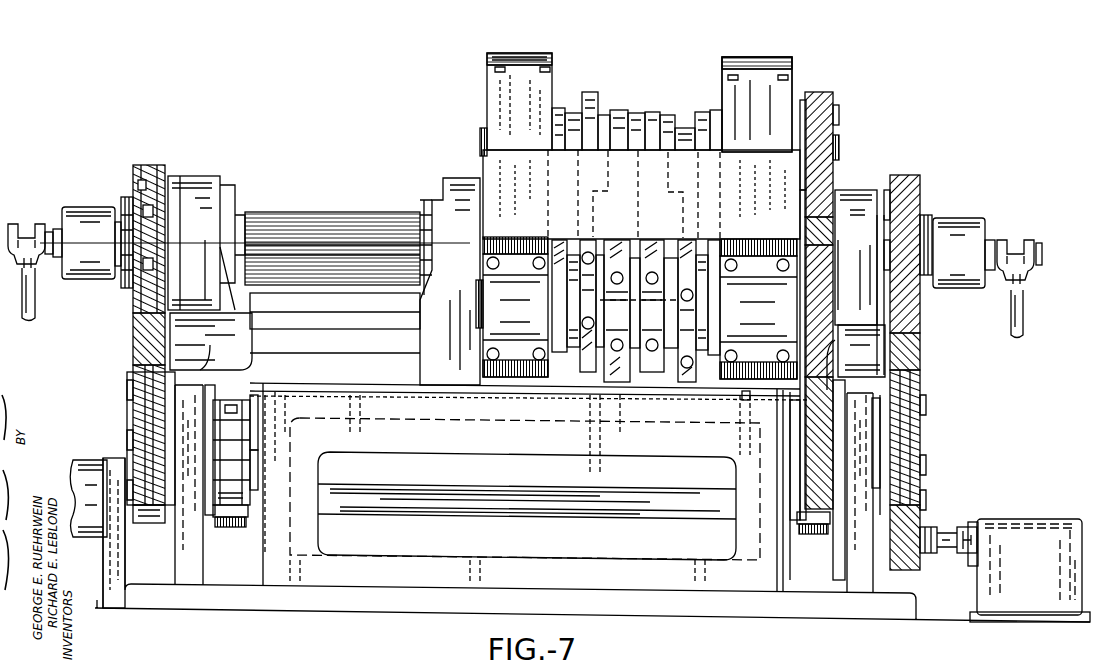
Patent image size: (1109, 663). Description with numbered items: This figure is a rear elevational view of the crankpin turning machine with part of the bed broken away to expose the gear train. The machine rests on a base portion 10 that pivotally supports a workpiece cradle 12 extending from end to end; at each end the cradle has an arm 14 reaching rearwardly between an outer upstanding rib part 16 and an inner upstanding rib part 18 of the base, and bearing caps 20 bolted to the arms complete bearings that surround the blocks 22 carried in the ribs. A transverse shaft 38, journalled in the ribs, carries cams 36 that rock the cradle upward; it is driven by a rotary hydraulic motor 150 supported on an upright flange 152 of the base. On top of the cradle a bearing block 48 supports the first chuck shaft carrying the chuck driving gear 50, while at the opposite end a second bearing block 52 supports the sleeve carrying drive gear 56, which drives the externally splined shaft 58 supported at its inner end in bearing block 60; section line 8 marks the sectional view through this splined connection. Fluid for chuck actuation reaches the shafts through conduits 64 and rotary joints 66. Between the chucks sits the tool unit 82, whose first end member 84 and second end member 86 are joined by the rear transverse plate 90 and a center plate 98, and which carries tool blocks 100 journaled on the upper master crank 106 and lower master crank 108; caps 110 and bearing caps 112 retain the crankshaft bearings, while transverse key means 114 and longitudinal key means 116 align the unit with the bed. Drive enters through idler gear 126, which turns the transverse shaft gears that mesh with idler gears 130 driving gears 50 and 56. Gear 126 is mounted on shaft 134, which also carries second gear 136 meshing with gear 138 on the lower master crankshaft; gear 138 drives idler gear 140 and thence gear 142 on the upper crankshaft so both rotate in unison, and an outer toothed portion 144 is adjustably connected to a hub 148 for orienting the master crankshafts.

The section line 8- 8 is at (118, 235).
The base portion 10 is at (228, 601).
The workpiece cradle 12 is at (306, 352).
The arm 14 is at (248, 362).
The outer upstanding rib part 16 is at (184, 595).
The inner upstanding rib part 18 is at (261, 540).
The bearing cap 20 is at (248, 457).
The block 22 is at (255, 494).
The cam 36 is at (218, 520).
The shaft 38 is at (473, 505).
The bearing block 48 is at (858, 190).
The gear 50 is at (922, 194).
The second bearing block 52 is at (197, 185).
The drive gear 56 is at (158, 166).
The externally splined shaft 58 is at (301, 212).
The bearing block 60 is at (447, 178).
The conduit 64 is at (36, 298).
The rotary joint 66 is at (24, 226).
The tool unit 82 is at (777, 53).
The first end member 84 is at (732, 90).
The second end member 86 is at (520, 88).
The transverse plate 90 is at (738, 163).
The center plate 98 is at (634, 112).
The tool block 100 is at (614, 112).
The master crank 106 is at (475, 137).
The master crank 108 is at (476, 290).
The cap 110 is at (487, 70).
The bearing cap 112 is at (496, 315).
The transverse key means 114 is at (372, 380).
The longitudinal key means 116 is at (744, 400).
The idler gear 126 is at (133, 402).
The idler gear 130 is at (134, 357).
The shaft 134 is at (795, 440).
The second gear 136 is at (805, 456).
The gear 138 is at (828, 275).
The idler gear 140 is at (830, 231).
The gear 142 is at (835, 102).
The outer toothed portion 144 is at (826, 94).
The hub 148 is at (822, 125).
The rotary hydraulic motor 150 is at (89, 460).
The upright flange 152 is at (105, 556).